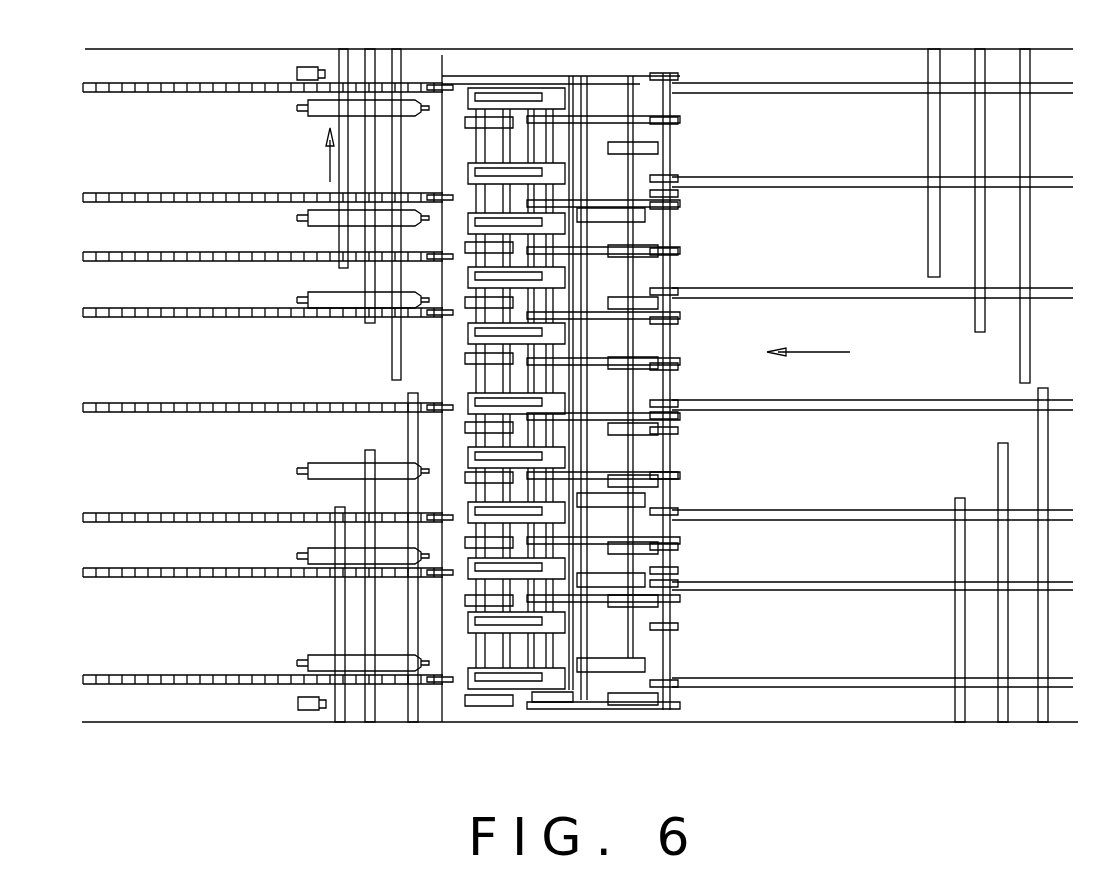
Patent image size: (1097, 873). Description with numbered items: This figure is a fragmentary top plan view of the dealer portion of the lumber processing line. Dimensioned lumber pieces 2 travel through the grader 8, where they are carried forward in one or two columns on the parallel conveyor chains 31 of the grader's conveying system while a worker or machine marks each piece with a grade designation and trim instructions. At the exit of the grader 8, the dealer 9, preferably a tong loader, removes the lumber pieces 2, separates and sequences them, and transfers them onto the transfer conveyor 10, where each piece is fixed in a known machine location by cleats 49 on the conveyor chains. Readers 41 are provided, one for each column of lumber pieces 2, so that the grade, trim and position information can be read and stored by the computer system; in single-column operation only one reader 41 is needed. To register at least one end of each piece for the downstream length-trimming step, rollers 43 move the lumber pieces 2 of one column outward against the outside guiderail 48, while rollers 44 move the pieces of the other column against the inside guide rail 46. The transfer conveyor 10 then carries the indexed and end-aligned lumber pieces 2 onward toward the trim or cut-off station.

The dimensioned lumber piece 2 is at (405, 72).
The grader 8 is at (782, 725).
The dealer 9 is at (572, 725).
The transfer conveyor 10 is at (147, 722).
The conveyor chains 31 is at (782, 580).
The reader 41 is at (215, 675).
The roller 43 is at (322, 118).
The roller 44 is at (320, 463).
The inside guide rail 46 is at (277, 722).
The outside guiderail 48 is at (266, 49).
The cleat 49 is at (162, 193).